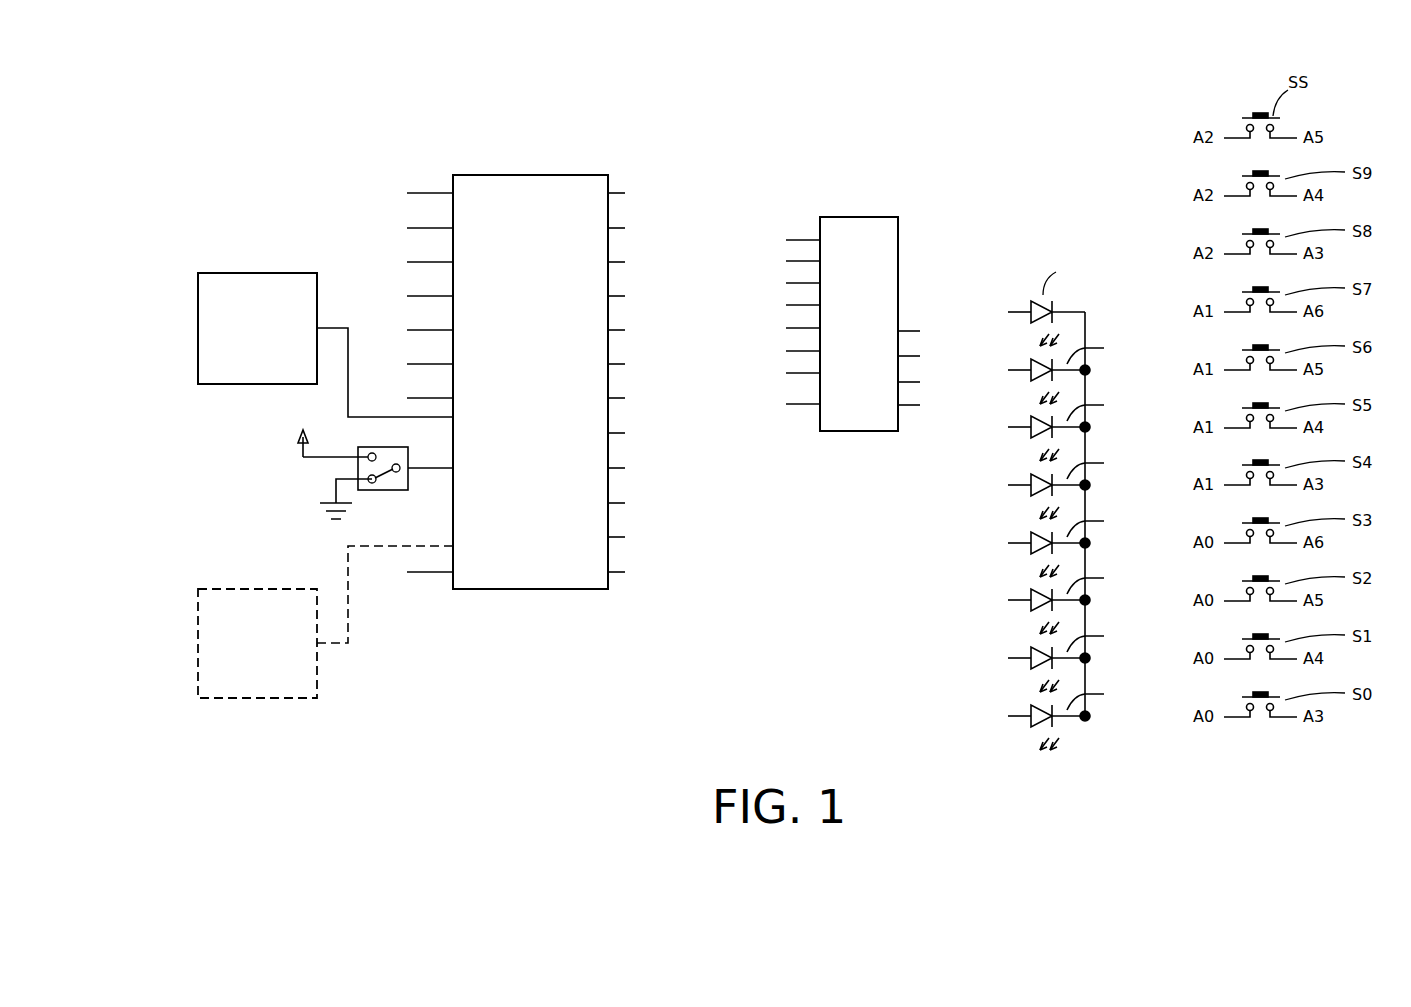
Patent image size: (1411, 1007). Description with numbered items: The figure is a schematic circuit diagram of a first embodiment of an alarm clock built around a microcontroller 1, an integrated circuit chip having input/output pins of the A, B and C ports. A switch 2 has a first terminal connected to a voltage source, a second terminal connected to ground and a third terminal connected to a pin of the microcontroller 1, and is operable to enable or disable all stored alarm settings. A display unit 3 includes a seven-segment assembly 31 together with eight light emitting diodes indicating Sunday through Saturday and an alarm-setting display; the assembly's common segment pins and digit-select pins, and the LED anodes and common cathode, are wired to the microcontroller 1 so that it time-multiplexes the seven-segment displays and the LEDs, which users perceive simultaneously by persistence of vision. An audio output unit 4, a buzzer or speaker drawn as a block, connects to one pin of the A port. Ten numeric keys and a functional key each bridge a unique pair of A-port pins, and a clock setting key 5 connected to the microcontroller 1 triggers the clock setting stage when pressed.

The microcontroller 1 is at (537, 175).
The switch 2 is at (383, 490).
The display unit 3 is at (954, 483).
The seven-segment assembly 31 is at (855, 441).
The audio output unit 4 is at (258, 273).
The clock setting key 5 is at (258, 589).